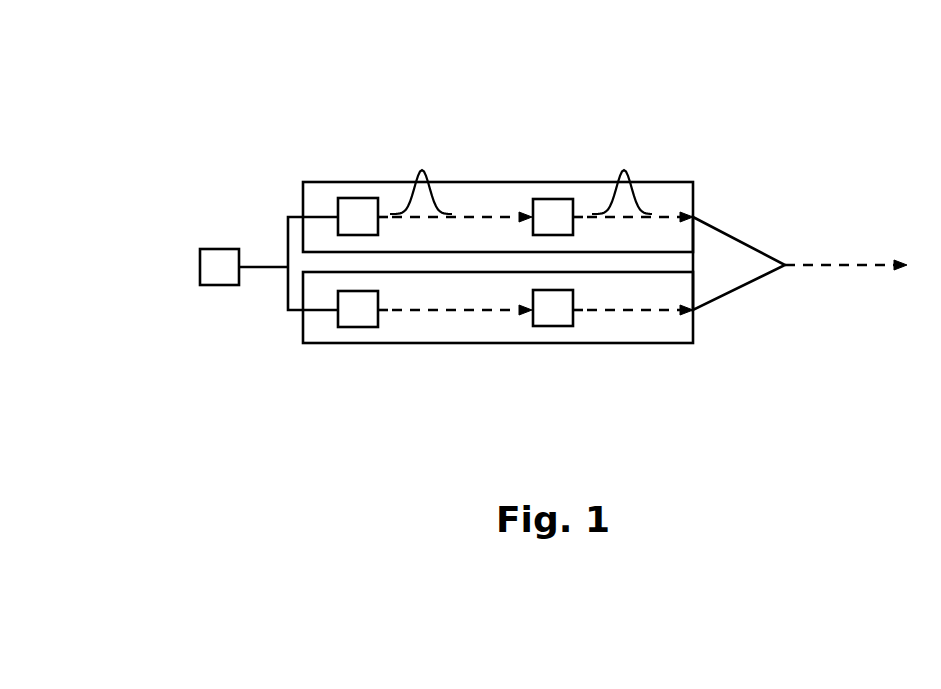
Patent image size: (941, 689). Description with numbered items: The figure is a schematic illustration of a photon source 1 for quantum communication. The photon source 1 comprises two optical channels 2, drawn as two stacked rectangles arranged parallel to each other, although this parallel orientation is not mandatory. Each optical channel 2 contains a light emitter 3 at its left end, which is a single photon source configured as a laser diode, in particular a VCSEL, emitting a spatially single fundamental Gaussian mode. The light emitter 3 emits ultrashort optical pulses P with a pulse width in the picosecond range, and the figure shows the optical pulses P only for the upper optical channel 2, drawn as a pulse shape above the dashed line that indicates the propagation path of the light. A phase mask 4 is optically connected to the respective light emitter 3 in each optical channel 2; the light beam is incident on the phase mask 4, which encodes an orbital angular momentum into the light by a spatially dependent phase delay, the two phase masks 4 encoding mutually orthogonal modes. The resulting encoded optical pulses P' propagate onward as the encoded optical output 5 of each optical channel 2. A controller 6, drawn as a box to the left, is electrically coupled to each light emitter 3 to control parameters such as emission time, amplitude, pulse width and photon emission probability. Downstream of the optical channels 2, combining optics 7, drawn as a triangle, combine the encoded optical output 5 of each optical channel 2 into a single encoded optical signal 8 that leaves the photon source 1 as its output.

The photon source 1 is at (847, 110).
The optical channel 2 is at (513, 181).
The light emitter 3 is at (362, 198).
The phase mask 4 is at (550, 199).
The encoded optical output 5 is at (674, 212).
The controller 6 is at (210, 285).
The combining optics 7 is at (735, 250).
The encoded optical signal 8 is at (843, 263).
The optical pulses P is at (435, 152).
The encoded optical pulses P' is at (643, 147).